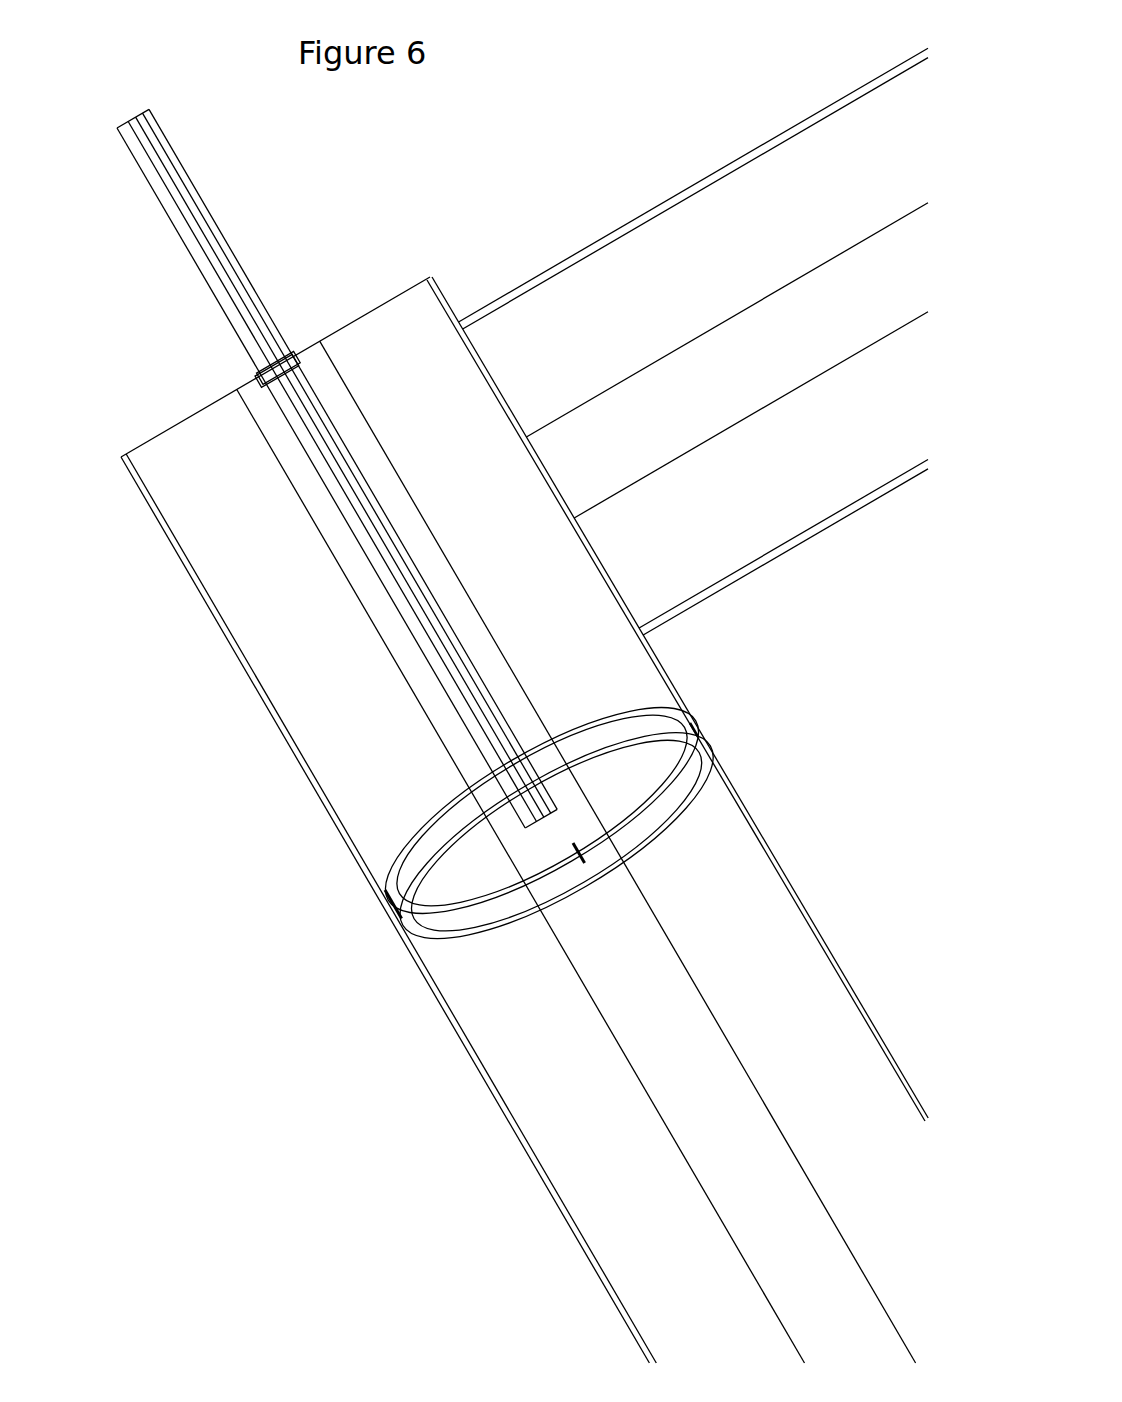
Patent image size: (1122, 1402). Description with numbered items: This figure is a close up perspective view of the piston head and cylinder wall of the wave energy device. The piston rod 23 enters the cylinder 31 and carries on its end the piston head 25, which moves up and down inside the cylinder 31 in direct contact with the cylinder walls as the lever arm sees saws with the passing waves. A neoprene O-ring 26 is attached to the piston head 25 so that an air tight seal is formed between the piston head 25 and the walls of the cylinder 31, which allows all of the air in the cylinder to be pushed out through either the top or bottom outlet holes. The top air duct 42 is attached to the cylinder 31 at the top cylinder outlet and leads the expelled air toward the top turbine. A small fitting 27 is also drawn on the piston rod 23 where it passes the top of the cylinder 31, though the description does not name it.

The piston rod 23 is at (182, 244).
The piston head 25 is at (425, 827).
The neoprene O-ring 26 is at (430, 920).
The retaining clip 27 is at (258, 376).
The cylinder 31 is at (203, 608).
The top air duct 42 is at (697, 182).